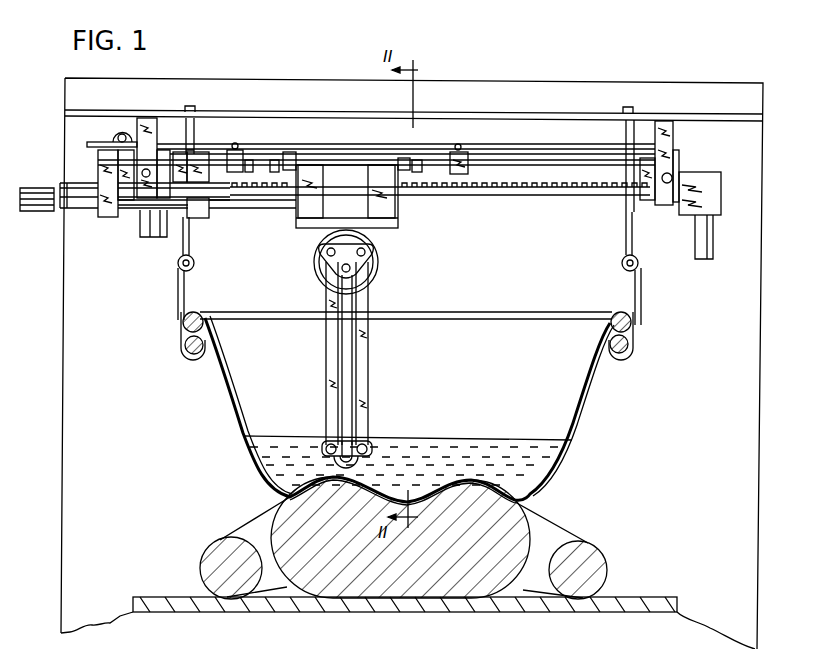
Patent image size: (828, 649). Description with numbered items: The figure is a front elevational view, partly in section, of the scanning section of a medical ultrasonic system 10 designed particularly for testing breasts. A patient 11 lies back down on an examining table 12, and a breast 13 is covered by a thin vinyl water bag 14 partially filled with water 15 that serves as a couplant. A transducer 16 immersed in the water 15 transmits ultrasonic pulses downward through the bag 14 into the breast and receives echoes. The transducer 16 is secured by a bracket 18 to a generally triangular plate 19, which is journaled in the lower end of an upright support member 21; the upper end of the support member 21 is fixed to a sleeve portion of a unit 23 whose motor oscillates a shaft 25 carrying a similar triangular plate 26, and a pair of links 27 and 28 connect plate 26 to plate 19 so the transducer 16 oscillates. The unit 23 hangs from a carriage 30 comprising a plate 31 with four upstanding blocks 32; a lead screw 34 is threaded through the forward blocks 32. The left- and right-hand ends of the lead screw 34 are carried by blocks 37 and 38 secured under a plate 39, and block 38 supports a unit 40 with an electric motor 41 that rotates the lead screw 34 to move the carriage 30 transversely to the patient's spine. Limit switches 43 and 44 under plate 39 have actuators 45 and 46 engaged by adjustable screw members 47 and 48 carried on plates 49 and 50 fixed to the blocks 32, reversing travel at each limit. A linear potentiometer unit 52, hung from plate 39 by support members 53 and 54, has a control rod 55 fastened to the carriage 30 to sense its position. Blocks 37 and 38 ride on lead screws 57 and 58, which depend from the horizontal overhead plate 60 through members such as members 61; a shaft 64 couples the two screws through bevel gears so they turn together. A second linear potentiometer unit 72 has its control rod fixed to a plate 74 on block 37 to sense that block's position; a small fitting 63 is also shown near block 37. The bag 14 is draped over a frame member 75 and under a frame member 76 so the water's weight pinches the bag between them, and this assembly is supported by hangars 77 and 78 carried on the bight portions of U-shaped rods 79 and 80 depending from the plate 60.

The medical ultrasonic system 10 is at (58, 74).
The patient 11 is at (568, 526).
The examining table 12 is at (632, 606).
The breasts 13 is at (268, 487).
The water bag 14 is at (572, 424).
The water 15 is at (558, 460).
The transducer 16 is at (372, 460).
The bracket 18 is at (324, 446).
The plate 19 is at (366, 442).
The upright support member 21 is at (352, 306).
The unit 23 is at (384, 254).
The shaft 25 is at (340, 268).
The plate 26 is at (356, 262).
The link 27 is at (326, 346).
The link 28 is at (364, 352).
The carriage 30 is at (398, 218).
The plate 31 is at (392, 229).
The blocks 32 is at (370, 208).
The lead screw 34 is at (530, 194).
The block 37 is at (133, 206).
The block 38 is at (674, 204).
The plate 39 is at (505, 150).
The unit 40 is at (724, 176).
The electric motor 41 is at (710, 258).
The limit switch 43 is at (234, 150).
The limit switch 44 is at (468, 158).
The actuator 45 is at (249, 160).
The actuator 46 is at (452, 156).
The member 47 is at (275, 160).
The member 48 is at (418, 166).
The plate 49 is at (290, 162).
The plate 50 is at (410, 162).
The linear potentiometer unit 52 is at (40, 190).
The support member 53 is at (108, 208).
The support member 54 is at (205, 214).
The control rod 55 is at (246, 206).
The lead screw 57 is at (147, 168).
The lead screw 58 is at (674, 176).
The horizontal overhead plate 60 is at (474, 120).
The members 61 is at (668, 146).
The lower block 63 is at (150, 236).
The shaft 64 is at (553, 164).
The linear potentiometer unit 72 is at (124, 135).
The plate 74 is at (118, 138).
The frame member 75 is at (184, 324).
The frame member 76 is at (186, 344).
The hangar 77 is at (178, 290).
The hangar 78 is at (640, 302).
The U-shaped rod 79 is at (182, 248).
The U-shaped rod 80 is at (622, 226).